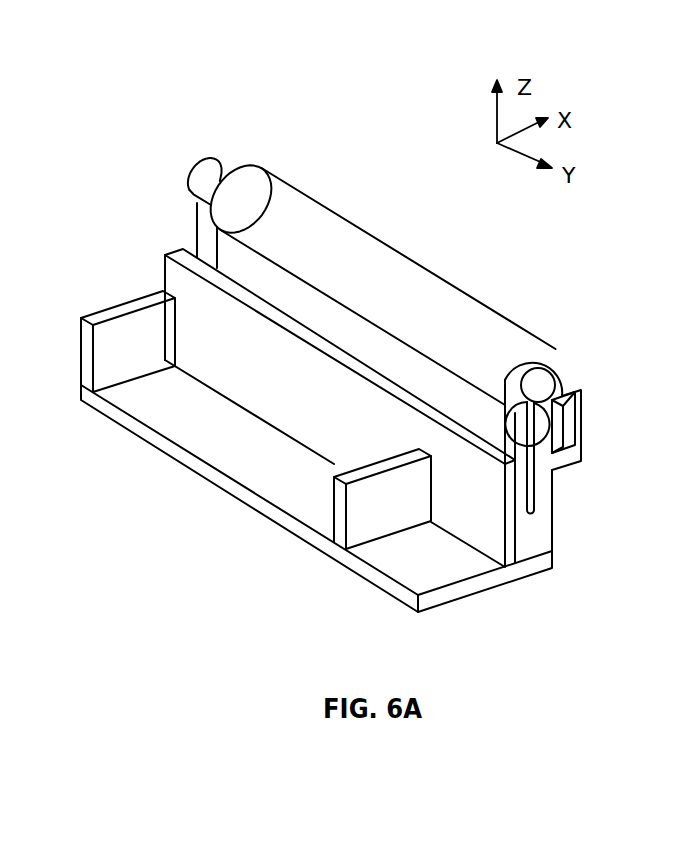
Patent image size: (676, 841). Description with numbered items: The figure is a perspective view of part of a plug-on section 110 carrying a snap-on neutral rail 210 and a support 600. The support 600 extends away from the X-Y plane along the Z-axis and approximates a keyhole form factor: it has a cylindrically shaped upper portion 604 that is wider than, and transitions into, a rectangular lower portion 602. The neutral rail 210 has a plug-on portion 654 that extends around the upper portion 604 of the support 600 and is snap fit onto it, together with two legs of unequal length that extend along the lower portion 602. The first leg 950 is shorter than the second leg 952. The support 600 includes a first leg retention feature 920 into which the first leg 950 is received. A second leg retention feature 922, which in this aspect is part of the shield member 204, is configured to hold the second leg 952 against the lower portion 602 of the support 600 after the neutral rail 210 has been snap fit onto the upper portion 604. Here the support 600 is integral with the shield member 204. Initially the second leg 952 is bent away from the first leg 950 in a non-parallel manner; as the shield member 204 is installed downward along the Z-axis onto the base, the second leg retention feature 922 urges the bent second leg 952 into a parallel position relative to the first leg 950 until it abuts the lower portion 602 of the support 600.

The plug-on section 110 is at (315, 92).
The shield member 204 is at (220, 358).
The neutral rail 210 is at (383, 278).
The plug-on portion 654 is at (508, 346).
The upper portion 604 is at (562, 384).
The first leg 950 is at (562, 415).
The first leg retention feature 920 is at (572, 450).
The lower portion 602 is at (542, 497).
The support 600 is at (542, 533).
The second leg 952 is at (505, 418).
The second leg retention feature 922 is at (513, 537).